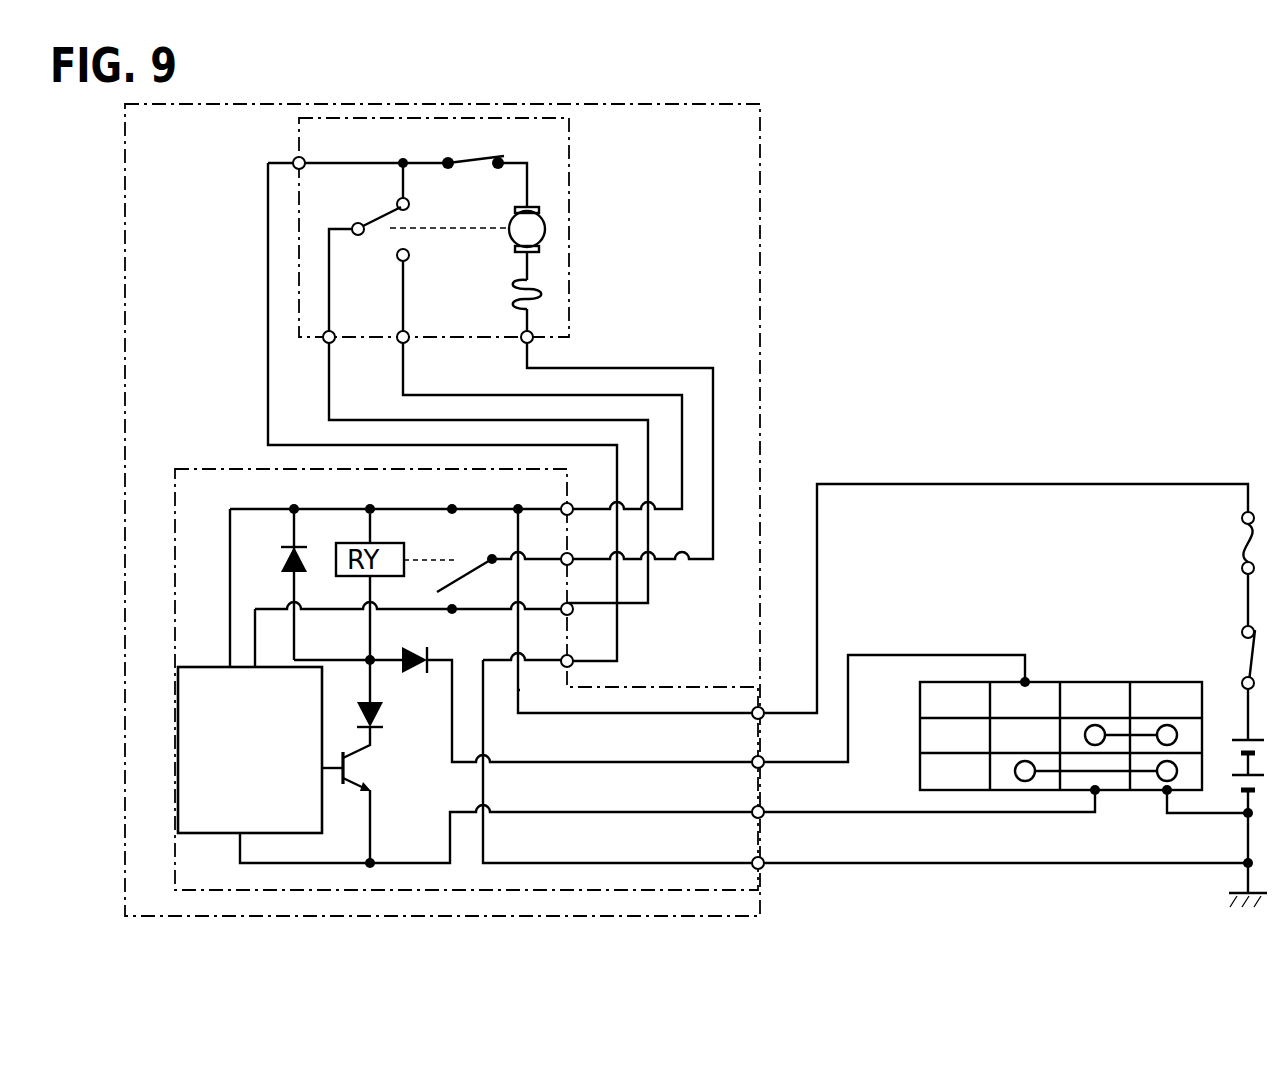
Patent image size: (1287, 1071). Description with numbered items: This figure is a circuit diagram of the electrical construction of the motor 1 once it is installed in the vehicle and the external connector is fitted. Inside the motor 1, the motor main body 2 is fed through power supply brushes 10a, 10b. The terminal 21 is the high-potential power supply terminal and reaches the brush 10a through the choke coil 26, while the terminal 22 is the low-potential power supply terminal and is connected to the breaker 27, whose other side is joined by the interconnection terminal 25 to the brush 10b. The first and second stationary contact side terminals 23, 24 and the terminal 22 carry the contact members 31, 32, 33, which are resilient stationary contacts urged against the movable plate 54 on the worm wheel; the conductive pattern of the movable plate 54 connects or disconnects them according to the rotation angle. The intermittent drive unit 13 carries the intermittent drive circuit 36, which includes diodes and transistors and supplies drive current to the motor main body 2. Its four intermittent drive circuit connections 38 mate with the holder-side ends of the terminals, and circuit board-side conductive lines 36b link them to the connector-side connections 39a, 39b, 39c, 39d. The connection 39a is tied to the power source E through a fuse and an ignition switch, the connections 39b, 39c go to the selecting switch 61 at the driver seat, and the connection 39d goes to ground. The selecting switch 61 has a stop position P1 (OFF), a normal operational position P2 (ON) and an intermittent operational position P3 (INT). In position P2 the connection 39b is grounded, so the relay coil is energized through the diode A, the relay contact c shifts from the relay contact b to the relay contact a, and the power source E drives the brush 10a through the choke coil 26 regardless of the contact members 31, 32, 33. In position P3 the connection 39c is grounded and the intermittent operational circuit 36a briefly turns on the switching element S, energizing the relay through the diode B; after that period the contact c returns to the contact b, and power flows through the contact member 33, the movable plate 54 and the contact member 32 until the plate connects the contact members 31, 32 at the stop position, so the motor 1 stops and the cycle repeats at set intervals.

The motor 1 is at (760, 173).
The motor main body 2 is at (568, 223).
The power supply brush 10a is at (540, 250).
The power supply brush 10b is at (540, 210).
The intermittent drive unit 13 is at (454, 640).
The terminal 21 is at (527, 331).
The terminal 22 is at (364, 162).
The first stationary contact side terminal 23 is at (329, 318).
The second stationary contact side terminal 24 is at (403, 318).
The interconnection terminal 25 is at (530, 186).
The choke coil 26 is at (540, 293).
The breaker 27 is at (480, 157).
The contact member 31 is at (407, 192).
The contact member 32 is at (329, 258).
The contact member 33 is at (403, 258).
The intermittent drive circuit 36 is at (210, 468).
The intermittent operational circuit 36a is at (200, 667).
The circuit board-side conductive lines 36b is at (532, 514).
The intermittent drive circuit connections 38 is at (571, 504).
The connector-side connection 39a is at (762, 709).
The connector-side connection 39b is at (762, 758).
The connector-side connection 39c is at (762, 808).
The connector-side connection 39d is at (762, 859).
The movable plate 54 is at (400, 220).
The selecting switch 61 is at (1036, 705).
The relay contact a is at (452, 515).
The relay contact b is at (452, 588).
The relay contact c is at (492, 556).
The diode A is at (419, 656).
The diode B is at (383, 720).
The switching element S is at (335, 772).
The power source E is at (1249, 739).
The stop position P1 is at (920, 707).
The normal operational position P2 is at (920, 777).
The intermittent operational position P3 is at (920, 743).